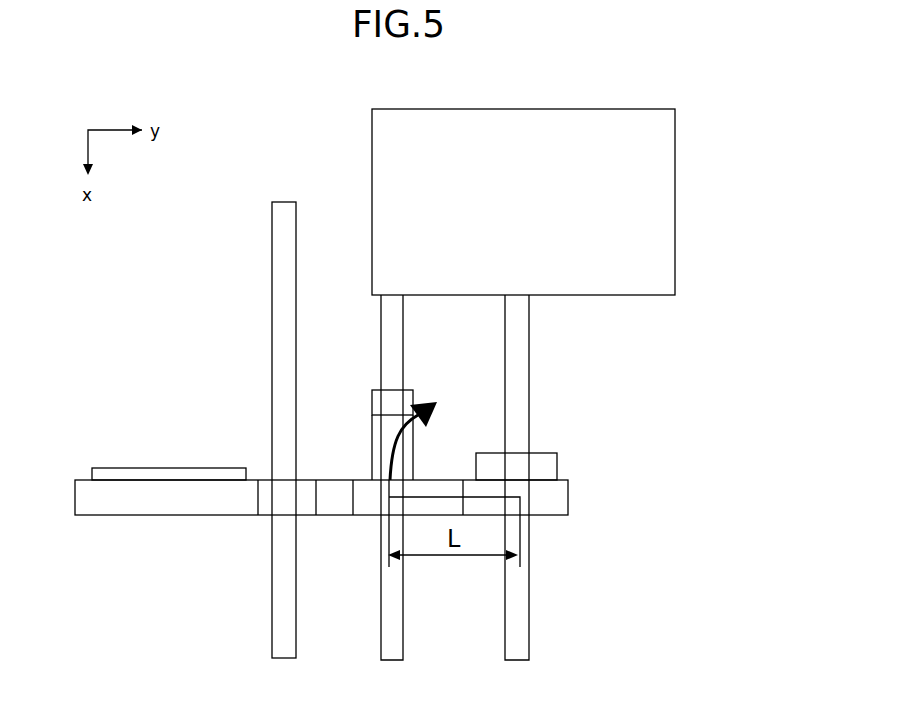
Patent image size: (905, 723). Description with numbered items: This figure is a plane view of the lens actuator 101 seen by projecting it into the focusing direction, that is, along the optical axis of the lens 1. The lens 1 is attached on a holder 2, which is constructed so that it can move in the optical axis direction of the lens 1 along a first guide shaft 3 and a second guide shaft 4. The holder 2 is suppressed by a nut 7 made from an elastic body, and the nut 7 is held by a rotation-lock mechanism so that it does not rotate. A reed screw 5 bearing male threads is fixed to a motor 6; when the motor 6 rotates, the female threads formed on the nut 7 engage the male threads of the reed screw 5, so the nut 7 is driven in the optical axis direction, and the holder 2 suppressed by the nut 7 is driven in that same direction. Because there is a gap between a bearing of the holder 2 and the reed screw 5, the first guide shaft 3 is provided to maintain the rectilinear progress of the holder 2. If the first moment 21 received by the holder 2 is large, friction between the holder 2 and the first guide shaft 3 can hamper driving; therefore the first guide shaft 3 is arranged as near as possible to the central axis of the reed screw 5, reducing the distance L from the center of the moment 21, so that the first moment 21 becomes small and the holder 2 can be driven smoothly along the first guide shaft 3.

The lens actuator 101 is at (170, 348).
The lens 1 is at (147, 473).
The holder 2 is at (212, 497).
The first guide shaft 3 is at (397, 610).
The second guide shaft 4 is at (282, 602).
The reed screw 5 is at (520, 355).
The motor 6 is at (660, 176).
The nut 7 is at (537, 465).
The first moment 21 is at (418, 412).